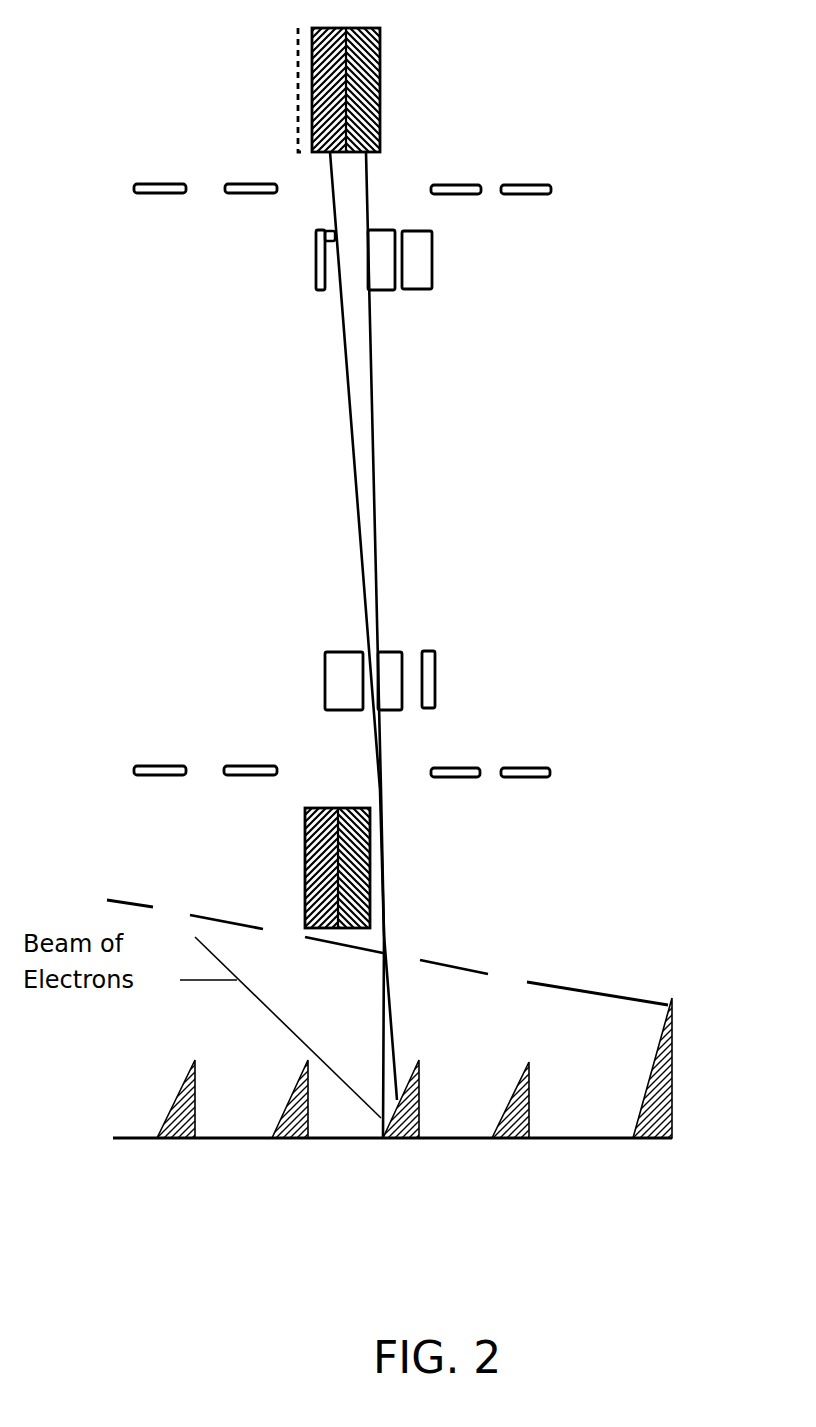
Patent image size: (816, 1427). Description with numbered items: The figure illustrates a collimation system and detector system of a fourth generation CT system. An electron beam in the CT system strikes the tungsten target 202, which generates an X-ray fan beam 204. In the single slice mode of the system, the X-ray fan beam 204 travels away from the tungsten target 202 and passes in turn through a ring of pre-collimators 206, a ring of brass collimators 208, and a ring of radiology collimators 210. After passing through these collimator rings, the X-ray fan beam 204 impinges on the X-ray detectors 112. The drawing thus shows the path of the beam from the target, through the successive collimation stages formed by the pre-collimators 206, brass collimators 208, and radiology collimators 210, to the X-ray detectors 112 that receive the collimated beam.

The X-ray detectors 112 is at (380, 78).
The tungsten target 202 is at (417, 1142).
The X-ray fan beam 204 is at (373, 473).
The ring of pre-collimators 206 is at (587, 993).
The ring of brass collimators 208 is at (542, 185).
The ring of radiology collimators 210 is at (425, 292).